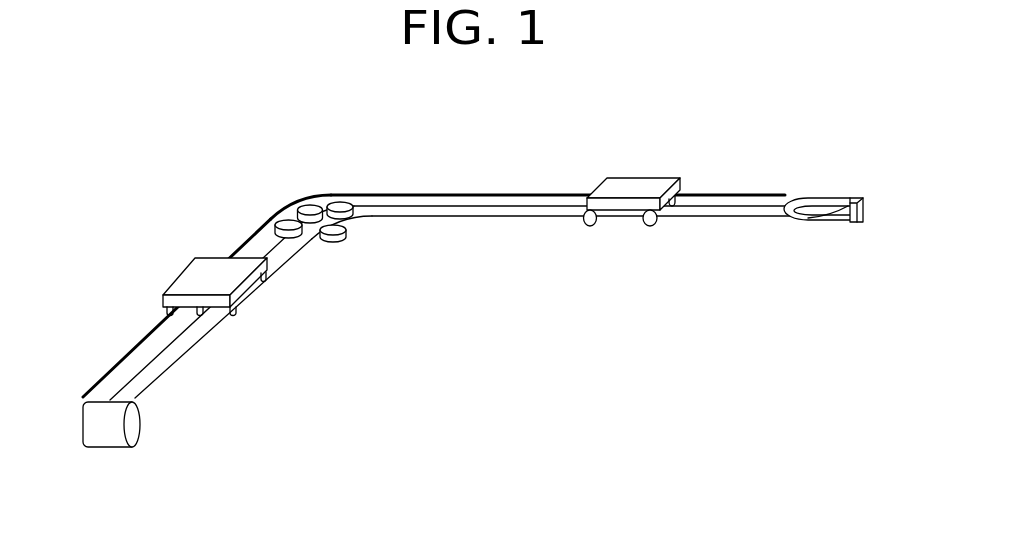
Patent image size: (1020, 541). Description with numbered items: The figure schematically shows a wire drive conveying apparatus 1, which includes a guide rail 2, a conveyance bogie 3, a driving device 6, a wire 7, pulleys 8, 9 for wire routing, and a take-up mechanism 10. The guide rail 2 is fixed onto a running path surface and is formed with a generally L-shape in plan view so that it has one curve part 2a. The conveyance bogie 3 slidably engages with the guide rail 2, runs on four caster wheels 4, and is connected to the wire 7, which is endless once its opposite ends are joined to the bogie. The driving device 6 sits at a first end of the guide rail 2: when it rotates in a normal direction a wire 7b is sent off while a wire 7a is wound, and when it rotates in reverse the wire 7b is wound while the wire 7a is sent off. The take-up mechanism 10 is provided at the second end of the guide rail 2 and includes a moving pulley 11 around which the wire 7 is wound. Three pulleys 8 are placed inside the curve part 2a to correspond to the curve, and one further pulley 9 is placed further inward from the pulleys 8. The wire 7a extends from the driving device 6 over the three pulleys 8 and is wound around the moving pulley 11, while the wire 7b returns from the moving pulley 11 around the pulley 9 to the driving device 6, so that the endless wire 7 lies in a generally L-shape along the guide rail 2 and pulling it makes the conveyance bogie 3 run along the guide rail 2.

The wire drive conveying apparatus 1 is at (147, 235).
The guide rail 2 is at (140, 343).
The curve part 2a is at (278, 197).
The conveyance bogie 3 is at (652, 137).
The caster wheels 4 is at (648, 227).
The driving device 6 is at (138, 446).
The wire 7 is at (212, 339).
The wire 7a is at (135, 376).
The wire 7b is at (170, 370).
The pulleys for wire routing 8 is at (306, 201).
The pulley for wire routing 9 is at (335, 242).
The take-up mechanism 10 is at (865, 178).
The moving pulley 11 is at (788, 222).